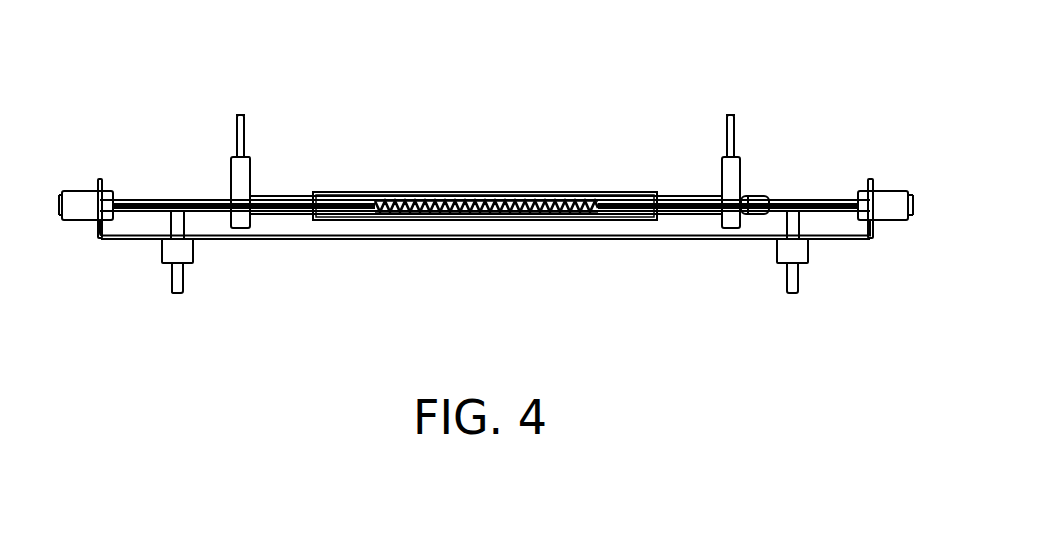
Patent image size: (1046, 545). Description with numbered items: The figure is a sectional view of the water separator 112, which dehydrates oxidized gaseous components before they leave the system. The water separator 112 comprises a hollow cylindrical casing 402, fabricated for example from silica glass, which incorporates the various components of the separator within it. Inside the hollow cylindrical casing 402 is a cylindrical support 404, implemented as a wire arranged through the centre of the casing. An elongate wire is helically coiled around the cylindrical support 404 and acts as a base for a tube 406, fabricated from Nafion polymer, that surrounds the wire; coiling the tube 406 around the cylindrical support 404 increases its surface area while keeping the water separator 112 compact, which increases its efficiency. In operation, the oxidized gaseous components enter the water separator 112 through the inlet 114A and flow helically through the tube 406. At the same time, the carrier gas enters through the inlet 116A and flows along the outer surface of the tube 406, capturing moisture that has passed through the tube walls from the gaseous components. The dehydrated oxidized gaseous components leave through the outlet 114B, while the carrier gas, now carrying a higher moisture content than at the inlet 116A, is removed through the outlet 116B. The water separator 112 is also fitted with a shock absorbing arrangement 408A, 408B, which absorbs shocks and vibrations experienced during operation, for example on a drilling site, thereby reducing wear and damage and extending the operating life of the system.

The water separator 112 is at (879, 125).
The hollow cylindrical casing 402 is at (492, 191).
The cylindrical support 404 is at (612, 211).
The tube 406 is at (400, 191).
The inlet 114A is at (77, 222).
The outlet 114B is at (894, 221).
The inlet 116A is at (239, 113).
The outlet 116B is at (731, 113).
The shock absorbing arrangement 408A is at (188, 293).
The shock absorbing arrangement 408B is at (781, 287).